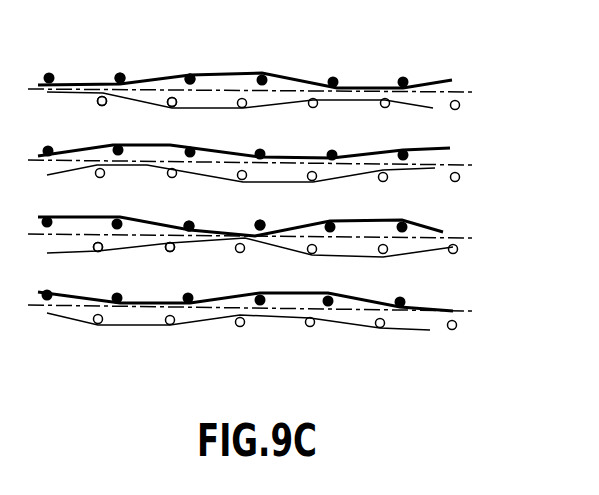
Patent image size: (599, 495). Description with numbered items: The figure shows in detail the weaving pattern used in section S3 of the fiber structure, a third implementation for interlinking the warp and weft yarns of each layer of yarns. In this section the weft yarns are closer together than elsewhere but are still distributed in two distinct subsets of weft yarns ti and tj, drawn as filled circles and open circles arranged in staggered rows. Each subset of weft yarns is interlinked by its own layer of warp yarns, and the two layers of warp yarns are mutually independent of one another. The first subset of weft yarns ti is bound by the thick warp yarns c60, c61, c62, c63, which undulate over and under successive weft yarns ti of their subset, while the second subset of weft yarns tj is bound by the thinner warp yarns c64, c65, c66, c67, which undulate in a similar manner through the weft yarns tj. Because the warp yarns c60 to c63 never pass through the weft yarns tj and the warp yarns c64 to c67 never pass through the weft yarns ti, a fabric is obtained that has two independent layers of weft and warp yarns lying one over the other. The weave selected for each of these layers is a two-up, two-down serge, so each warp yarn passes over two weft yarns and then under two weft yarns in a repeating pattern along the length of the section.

The warp yarn c60 is at (452, 80).
The warp yarn c61 is at (450, 148).
The warp yarn c62 is at (443, 232).
The warp yarn c63 is at (445, 311).
The warp yarn c64 is at (433, 108).
The warp yarn c65 is at (433, 170).
The warp yarn c66 is at (433, 247).
The warp yarn c67 is at (430, 330).
The weft yarns ti is at (121, 72).
The weft yarns tj is at (103, 105).